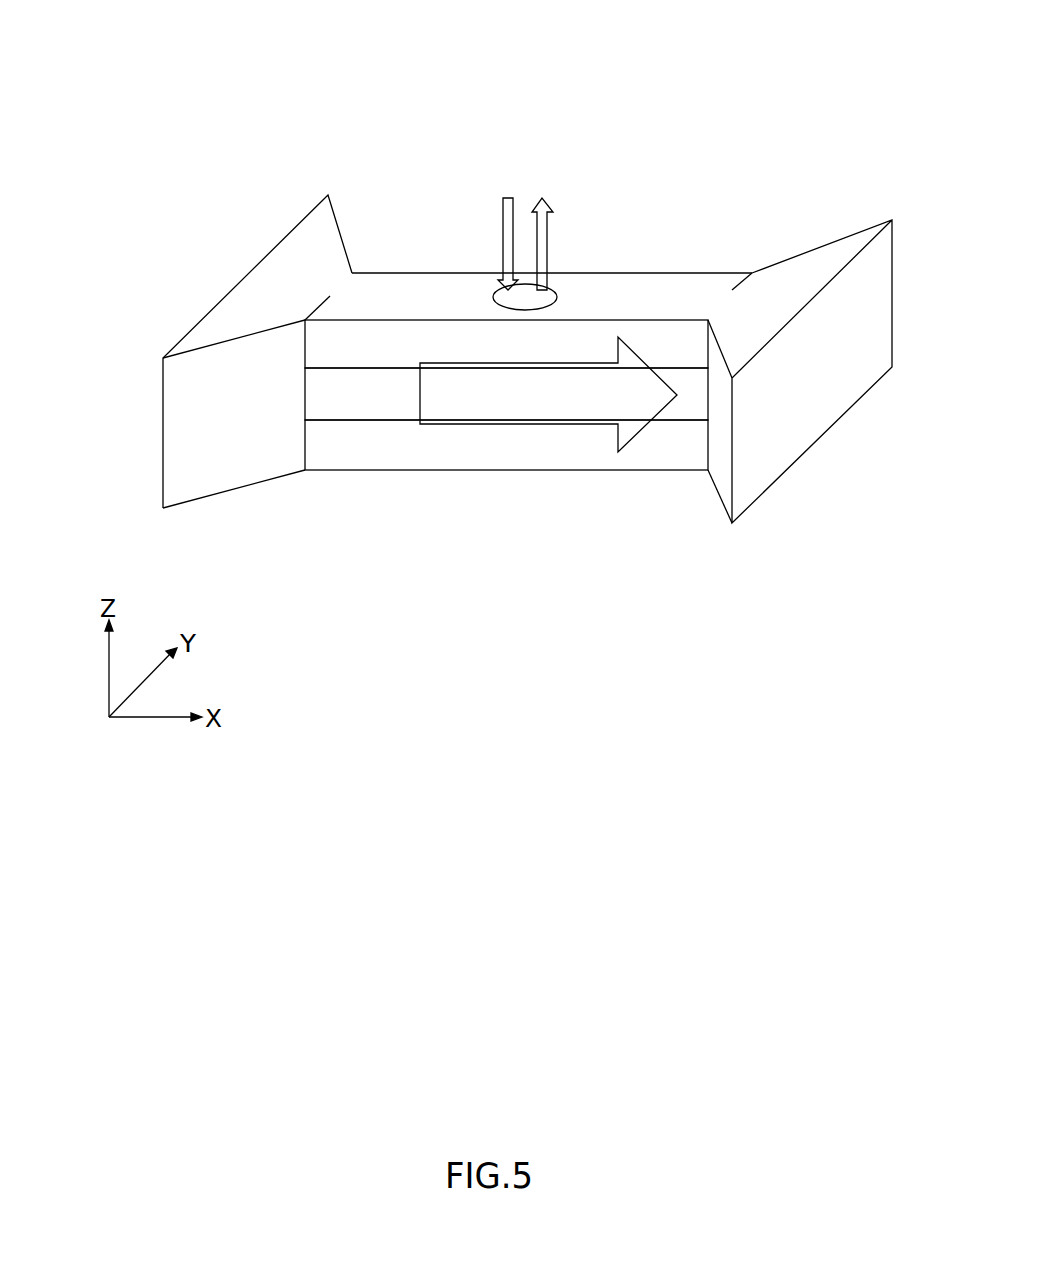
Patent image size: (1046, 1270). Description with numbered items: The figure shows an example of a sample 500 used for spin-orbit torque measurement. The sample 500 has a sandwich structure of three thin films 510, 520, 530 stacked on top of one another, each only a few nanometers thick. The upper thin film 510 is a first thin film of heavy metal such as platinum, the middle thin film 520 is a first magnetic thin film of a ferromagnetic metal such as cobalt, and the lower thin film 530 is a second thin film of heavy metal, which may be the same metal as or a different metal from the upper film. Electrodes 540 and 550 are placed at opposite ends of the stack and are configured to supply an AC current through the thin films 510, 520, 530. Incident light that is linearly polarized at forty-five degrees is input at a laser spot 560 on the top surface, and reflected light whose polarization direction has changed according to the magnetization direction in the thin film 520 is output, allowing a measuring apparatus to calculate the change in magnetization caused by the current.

The sample 500 is at (512, 42).
The thin film 510 is at (688, 342).
The thin film 520 is at (695, 388).
The thin film 530 is at (655, 453).
The electrode 540 is at (307, 230).
The electrode 550 is at (832, 250).
The laser spot 560 is at (552, 288).